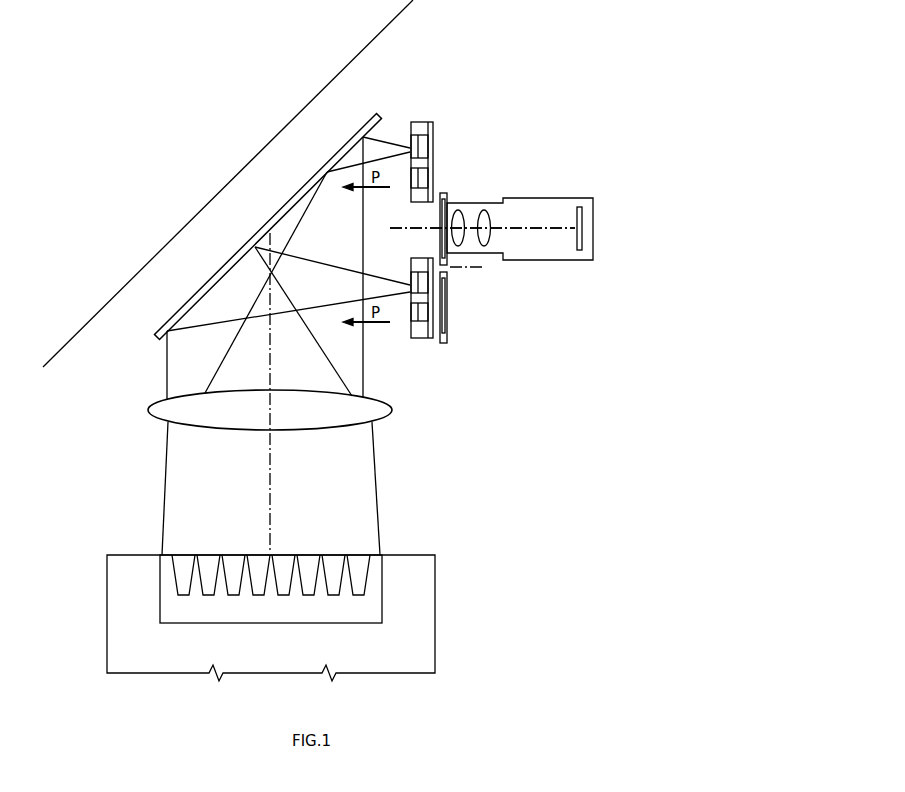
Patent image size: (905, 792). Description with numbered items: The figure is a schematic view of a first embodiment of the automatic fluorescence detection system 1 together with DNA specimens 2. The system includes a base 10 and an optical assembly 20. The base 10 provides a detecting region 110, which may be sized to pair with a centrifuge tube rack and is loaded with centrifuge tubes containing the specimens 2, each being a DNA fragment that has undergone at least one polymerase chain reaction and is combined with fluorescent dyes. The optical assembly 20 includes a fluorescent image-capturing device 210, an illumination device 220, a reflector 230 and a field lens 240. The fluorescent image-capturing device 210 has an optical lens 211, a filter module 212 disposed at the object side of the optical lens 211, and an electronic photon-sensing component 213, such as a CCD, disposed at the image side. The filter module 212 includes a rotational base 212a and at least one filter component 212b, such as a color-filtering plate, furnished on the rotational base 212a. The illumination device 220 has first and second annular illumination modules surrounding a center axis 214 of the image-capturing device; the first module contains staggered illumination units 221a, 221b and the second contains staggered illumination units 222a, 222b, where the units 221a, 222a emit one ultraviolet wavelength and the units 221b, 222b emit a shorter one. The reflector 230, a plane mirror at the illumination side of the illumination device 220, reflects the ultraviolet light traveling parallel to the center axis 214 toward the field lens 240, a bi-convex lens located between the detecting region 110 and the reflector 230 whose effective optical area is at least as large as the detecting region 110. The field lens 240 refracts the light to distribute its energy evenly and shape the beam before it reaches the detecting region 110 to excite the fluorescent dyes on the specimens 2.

The automatic fluorescence detection system 1 is at (516, 380).
The specimen 2 is at (380, 567).
The base 10 is at (422, 626).
The optical assembly 20 is at (229, 177).
The detecting region 110 is at (348, 545).
The fluorescent image-capturing device 210 is at (496, 133).
The optical lens 211 is at (472, 197).
The filter module 212 is at (499, 307).
The rotational base 212a is at (442, 337).
The filter component 212b is at (444, 308).
The electronic photon-sensing component 213 is at (579, 206).
The center axis 214 is at (558, 227).
The illumination device 220 is at (404, 200).
The illumination unit 221a is at (410, 277).
The illumination unit 221b is at (410, 183).
The illumination unit 222a is at (410, 142).
The illumination unit 222b is at (410, 318).
The reflector 230 is at (206, 275).
The field lens 240 is at (138, 403).